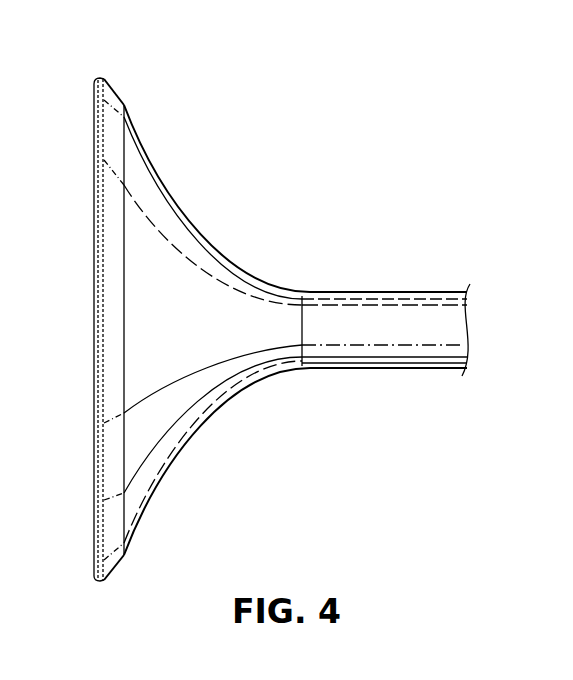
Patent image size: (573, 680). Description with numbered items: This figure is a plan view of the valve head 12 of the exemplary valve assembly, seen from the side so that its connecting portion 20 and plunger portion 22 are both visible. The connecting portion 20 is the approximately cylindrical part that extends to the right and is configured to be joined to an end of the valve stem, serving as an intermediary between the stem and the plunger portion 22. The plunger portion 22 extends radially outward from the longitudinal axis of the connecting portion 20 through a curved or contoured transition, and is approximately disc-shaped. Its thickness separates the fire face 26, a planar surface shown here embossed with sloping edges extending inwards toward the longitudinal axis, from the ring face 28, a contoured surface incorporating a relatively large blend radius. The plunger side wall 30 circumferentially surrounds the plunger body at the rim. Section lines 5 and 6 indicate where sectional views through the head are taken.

The section line 5- 5 is at (48, 25).
The section line 6- 6 is at (307, 173).
The valve head 12 is at (374, 158).
The connecting portion 20 is at (372, 292).
The plunger portion 22 is at (110, 86).
The fire face 26 is at (93, 432).
The ring face 28 is at (154, 168).
The plunger side wall 30 is at (117, 568).